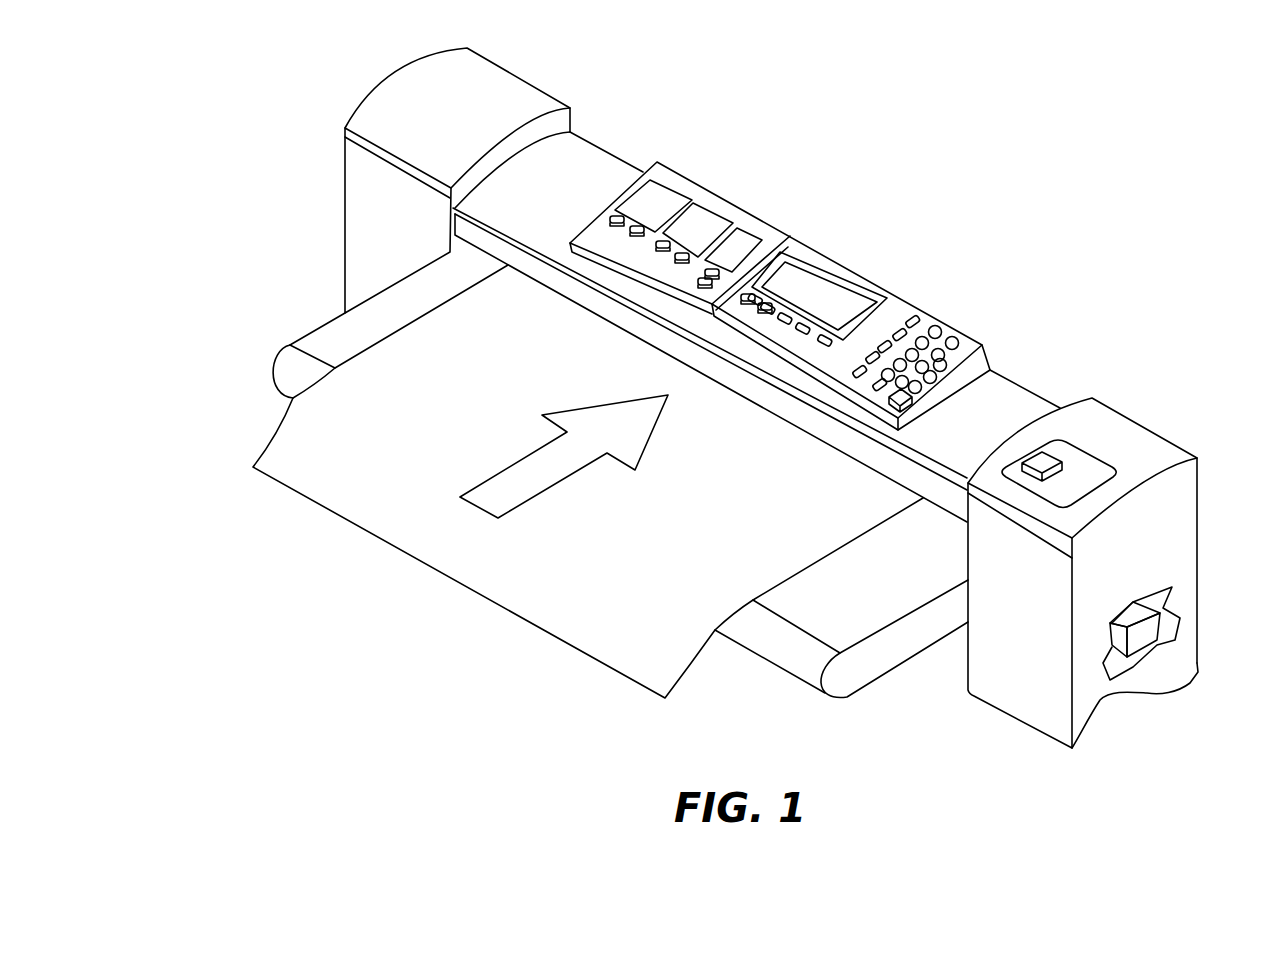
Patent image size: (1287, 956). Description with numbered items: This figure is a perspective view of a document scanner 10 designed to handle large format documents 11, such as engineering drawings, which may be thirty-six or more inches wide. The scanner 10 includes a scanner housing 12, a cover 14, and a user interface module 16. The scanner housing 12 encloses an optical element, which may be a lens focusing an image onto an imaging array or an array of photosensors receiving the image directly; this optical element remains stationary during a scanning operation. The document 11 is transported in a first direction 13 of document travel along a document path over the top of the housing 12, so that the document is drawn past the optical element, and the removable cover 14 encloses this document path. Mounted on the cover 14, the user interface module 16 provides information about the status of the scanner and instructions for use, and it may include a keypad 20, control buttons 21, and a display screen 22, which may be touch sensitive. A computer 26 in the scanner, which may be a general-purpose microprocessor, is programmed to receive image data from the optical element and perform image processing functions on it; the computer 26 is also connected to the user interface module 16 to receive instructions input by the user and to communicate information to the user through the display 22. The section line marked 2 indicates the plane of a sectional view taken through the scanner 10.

The section line 2- 2 is at (310, 177).
The document scanner 10 is at (1042, 345).
The document 11 is at (285, 470).
The scanner housing 12 is at (355, 248).
The first direction of document travel 13 is at (557, 470).
The cover 14 is at (590, 155).
The user interface module 16 is at (765, 232).
The keypad 20 is at (953, 348).
The control buttons 21 is at (667, 242).
The display screen 22 is at (813, 280).
The computer 26 is at (1148, 625).